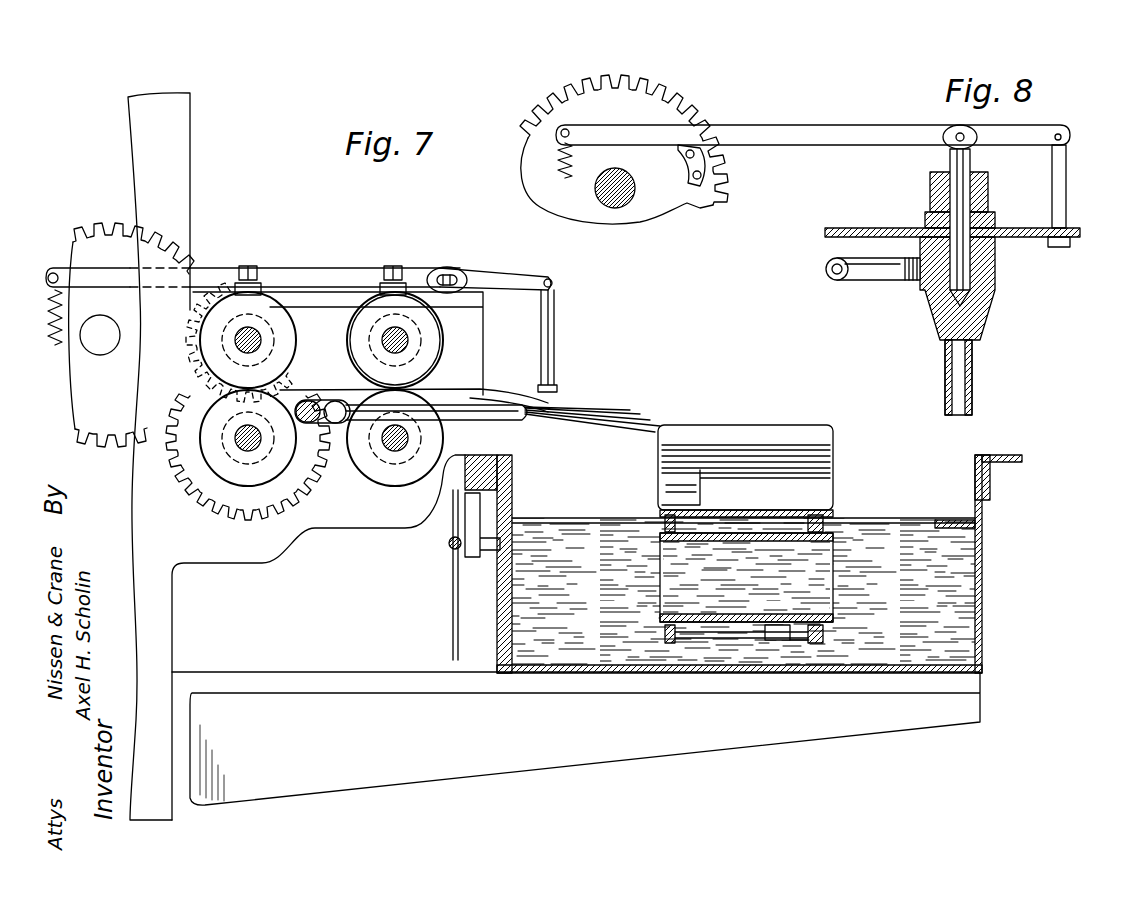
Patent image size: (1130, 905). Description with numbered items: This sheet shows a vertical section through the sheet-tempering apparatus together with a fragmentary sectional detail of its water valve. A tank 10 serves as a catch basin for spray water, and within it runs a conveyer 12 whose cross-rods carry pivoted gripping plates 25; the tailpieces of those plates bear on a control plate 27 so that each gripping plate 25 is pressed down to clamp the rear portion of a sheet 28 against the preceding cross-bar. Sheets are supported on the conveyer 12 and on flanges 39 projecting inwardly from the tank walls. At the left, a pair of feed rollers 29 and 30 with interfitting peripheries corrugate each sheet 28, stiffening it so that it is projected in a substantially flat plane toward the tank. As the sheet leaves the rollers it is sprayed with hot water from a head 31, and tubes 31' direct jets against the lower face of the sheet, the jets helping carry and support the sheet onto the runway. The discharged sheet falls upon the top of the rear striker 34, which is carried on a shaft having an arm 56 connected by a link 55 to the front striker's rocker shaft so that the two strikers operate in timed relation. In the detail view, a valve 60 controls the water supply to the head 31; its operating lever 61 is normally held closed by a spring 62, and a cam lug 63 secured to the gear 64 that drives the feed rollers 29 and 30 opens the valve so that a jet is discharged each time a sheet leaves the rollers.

In FIG. 7, the tank 10 is at (982, 510).
In FIG. 7, the conveyer 12 is at (825, 635).
In FIG. 7, the gripping plate 25 is at (760, 640).
In FIG. 7, the control plate 27 is at (870, 595).
In FIG. 7, the sheet 28 is at (478, 400).
In FIG. 7, the feed roller 29 is at (295, 388).
In FIG. 7, the feed roller 30 is at (343, 455).
In FIG. 7, the spray head 31 is at (323, 425).
In FIG. 8, the spray head 31 is at (991, 377).
In FIG. 7, the tube 31' is at (503, 400).
In FIG. 7, the rear striker 34 is at (818, 460).
In FIG. 7, the flange 39 is at (960, 527).
In FIG. 7, the link 55 is at (455, 560).
In FIG. 7, the arm 56 is at (458, 520).
In FIG. 8, the valve 60 is at (965, 270).
In FIG. 8, the operating lever 61 is at (820, 142).
In FIG. 8, the spring 62 is at (565, 162).
In FIG. 8, the cam lug 63 is at (668, 210).
In FIG. 8, the gear 64 is at (585, 215).